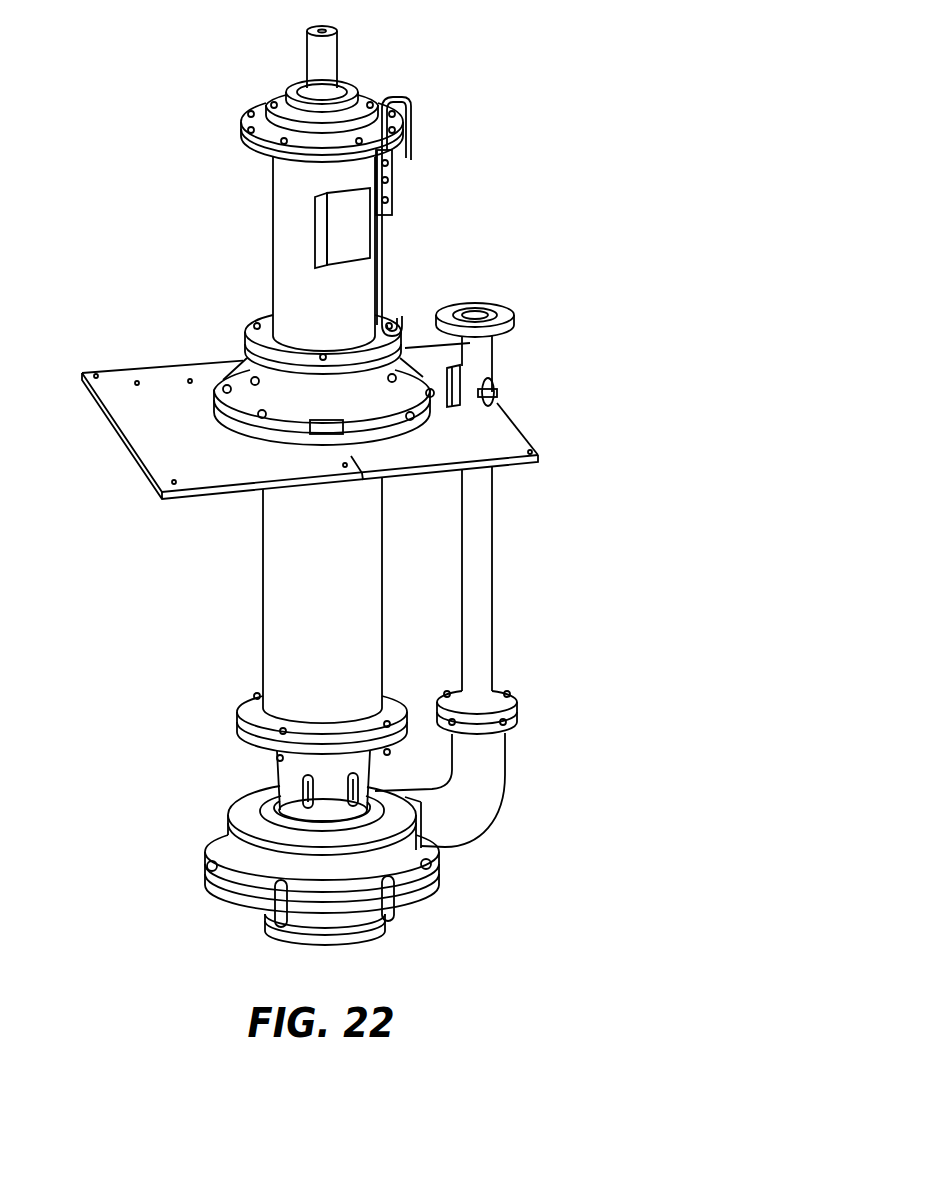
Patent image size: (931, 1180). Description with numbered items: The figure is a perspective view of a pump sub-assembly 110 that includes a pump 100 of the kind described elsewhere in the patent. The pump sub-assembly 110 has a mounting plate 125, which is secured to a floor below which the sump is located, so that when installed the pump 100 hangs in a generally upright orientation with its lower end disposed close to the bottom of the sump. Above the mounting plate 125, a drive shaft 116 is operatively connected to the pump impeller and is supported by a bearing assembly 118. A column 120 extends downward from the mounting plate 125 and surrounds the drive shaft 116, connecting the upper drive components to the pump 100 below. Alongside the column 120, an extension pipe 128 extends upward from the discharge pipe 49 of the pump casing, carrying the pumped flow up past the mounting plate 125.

The pump 100 is at (194, 843).
The pump sub-assembly 110 is at (422, 258).
The drive shaft 116 is at (327, 63).
The bearing assembly 118 is at (273, 238).
The column 120 is at (263, 618).
The mounting plate 125 is at (160, 428).
The extension pipe 128 is at (476, 571).
The discharge pipe 49 is at (506, 792).